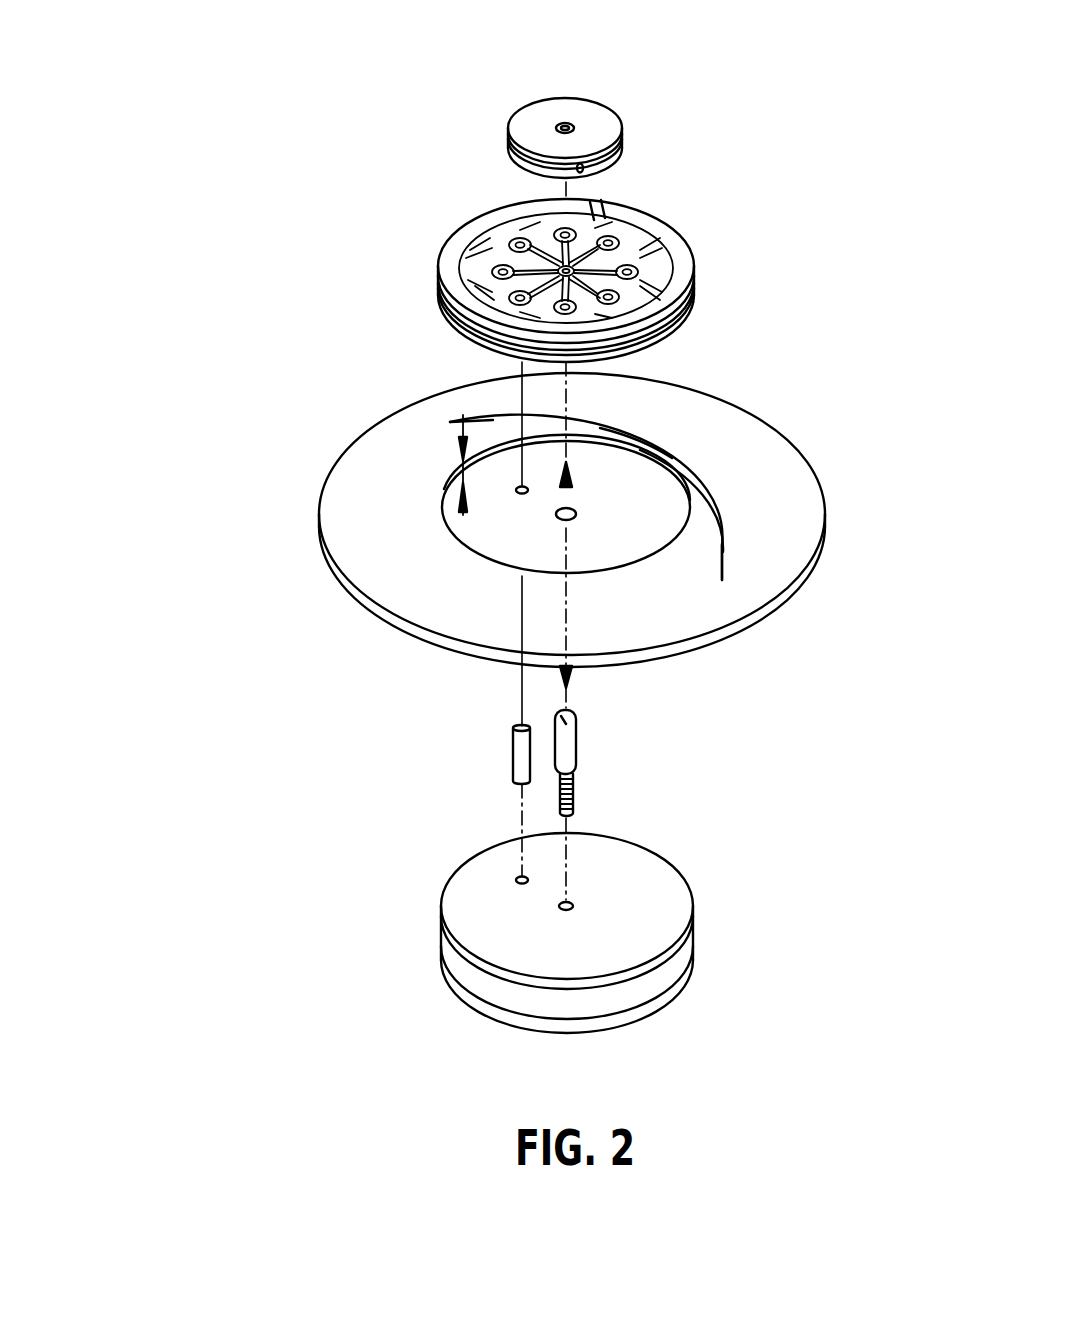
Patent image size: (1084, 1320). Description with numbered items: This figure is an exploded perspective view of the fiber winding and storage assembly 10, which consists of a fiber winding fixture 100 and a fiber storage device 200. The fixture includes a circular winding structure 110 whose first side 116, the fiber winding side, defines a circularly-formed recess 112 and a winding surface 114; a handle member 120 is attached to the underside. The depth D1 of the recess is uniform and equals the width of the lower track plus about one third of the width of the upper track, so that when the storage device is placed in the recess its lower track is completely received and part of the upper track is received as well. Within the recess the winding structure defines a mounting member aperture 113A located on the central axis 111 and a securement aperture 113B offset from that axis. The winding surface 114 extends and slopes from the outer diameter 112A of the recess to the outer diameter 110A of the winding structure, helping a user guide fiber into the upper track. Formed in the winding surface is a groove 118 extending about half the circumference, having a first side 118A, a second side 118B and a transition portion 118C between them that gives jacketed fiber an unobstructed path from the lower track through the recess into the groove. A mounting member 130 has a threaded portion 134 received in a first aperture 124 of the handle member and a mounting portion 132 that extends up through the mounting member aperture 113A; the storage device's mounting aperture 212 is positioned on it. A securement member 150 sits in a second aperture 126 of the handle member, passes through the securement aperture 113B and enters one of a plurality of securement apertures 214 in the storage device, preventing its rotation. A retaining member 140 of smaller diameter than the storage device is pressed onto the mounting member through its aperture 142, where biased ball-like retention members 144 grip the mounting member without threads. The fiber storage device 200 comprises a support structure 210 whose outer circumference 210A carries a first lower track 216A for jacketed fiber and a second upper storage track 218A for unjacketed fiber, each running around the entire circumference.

The fiber winding and storage assembly 10 is at (812, 208).
The fiber winding fixture 100 is at (283, 552).
The winding structure 110 is at (568, 528).
The outer diameter of winding structure 110A is at (770, 611).
The central axis 111 is at (571, 487).
The recess 112 is at (535, 562).
The outer diameter of recess 112A is at (447, 548).
The mounting member aperture 113A is at (577, 516).
The securement aperture 113B is at (526, 496).
The winding surface 114 is at (790, 510).
The first side 116 is at (375, 476).
The groove 118 is at (738, 488).
The first side of groove 118A is at (725, 551).
The second side of groove 118B is at (480, 420).
The transition portion 118C is at (688, 449).
The depth of the recess D1 is at (480, 468).
The handle member 120 is at (581, 920).
The first aperture 124 is at (570, 904).
The second aperture 126 is at (516, 881).
The mounting member 130 is at (645, 747).
The mounting portion 132 is at (578, 727).
The threaded portion 134 is at (574, 801).
The retaining member 140 is at (582, 90).
The aperture 142 is at (562, 125).
The retention members 144 is at (568, 125).
The securement member 150 is at (512, 752).
The fiber storage device 200 is at (573, 247).
The support structure 210 is at (475, 287).
The outer circumference 210A is at (455, 250).
The mounting aperture 212 is at (596, 202).
The securement apertures 214 is at (520, 238).
The first lower track 216A is at (628, 350).
The second upper storage track 218A is at (665, 336).